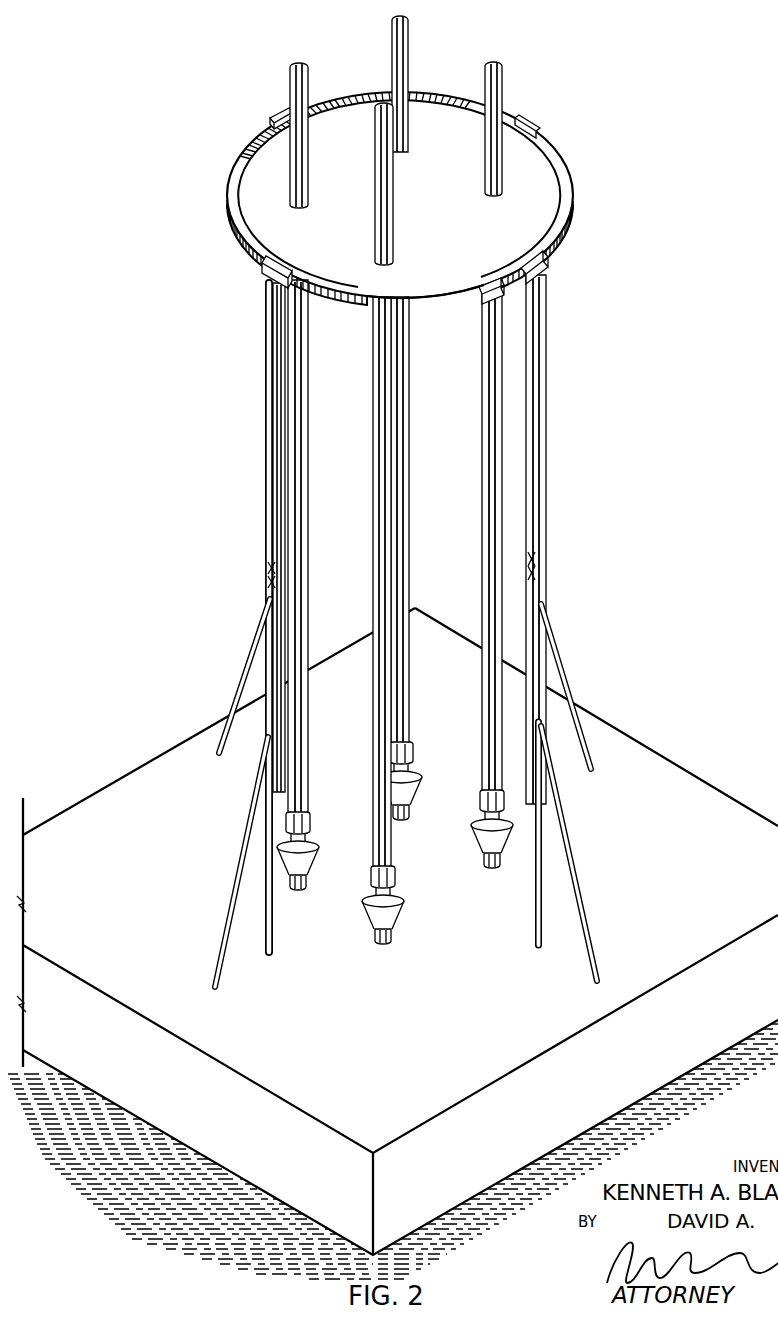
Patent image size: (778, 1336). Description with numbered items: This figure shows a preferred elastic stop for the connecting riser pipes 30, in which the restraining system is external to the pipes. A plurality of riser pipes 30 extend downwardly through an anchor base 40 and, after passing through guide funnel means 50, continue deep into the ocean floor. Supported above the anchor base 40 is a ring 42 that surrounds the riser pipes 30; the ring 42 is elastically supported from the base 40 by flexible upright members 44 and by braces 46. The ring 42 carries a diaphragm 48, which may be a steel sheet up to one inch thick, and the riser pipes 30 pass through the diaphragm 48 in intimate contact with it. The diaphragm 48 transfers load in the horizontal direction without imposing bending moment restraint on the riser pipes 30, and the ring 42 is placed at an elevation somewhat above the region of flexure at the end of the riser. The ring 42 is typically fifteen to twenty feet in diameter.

The connecting riser pipes 30 is at (408, 44).
The anchor base 40 is at (634, 756).
The ring 42 is at (558, 170).
The upright members 44 is at (272, 480).
The braces 46 is at (258, 641).
The diaphragm 48 is at (420, 298).
The guide funnel means 50 is at (487, 860).